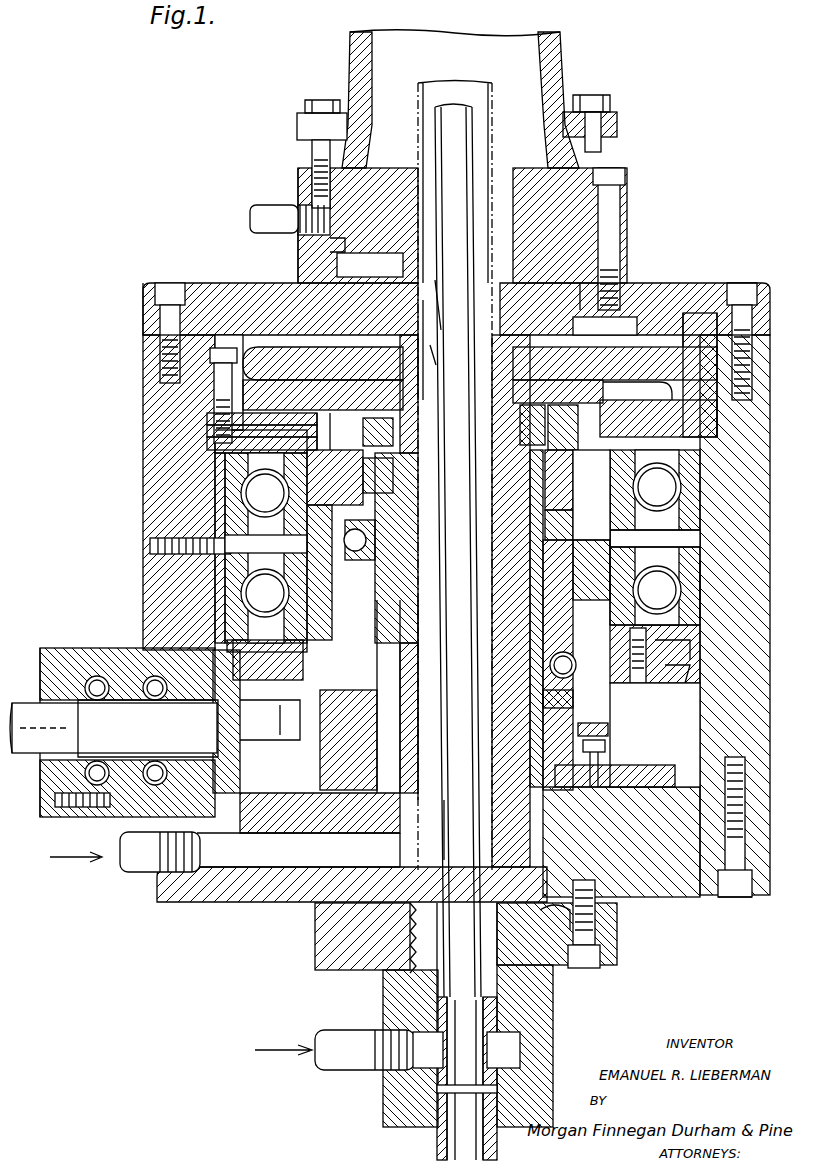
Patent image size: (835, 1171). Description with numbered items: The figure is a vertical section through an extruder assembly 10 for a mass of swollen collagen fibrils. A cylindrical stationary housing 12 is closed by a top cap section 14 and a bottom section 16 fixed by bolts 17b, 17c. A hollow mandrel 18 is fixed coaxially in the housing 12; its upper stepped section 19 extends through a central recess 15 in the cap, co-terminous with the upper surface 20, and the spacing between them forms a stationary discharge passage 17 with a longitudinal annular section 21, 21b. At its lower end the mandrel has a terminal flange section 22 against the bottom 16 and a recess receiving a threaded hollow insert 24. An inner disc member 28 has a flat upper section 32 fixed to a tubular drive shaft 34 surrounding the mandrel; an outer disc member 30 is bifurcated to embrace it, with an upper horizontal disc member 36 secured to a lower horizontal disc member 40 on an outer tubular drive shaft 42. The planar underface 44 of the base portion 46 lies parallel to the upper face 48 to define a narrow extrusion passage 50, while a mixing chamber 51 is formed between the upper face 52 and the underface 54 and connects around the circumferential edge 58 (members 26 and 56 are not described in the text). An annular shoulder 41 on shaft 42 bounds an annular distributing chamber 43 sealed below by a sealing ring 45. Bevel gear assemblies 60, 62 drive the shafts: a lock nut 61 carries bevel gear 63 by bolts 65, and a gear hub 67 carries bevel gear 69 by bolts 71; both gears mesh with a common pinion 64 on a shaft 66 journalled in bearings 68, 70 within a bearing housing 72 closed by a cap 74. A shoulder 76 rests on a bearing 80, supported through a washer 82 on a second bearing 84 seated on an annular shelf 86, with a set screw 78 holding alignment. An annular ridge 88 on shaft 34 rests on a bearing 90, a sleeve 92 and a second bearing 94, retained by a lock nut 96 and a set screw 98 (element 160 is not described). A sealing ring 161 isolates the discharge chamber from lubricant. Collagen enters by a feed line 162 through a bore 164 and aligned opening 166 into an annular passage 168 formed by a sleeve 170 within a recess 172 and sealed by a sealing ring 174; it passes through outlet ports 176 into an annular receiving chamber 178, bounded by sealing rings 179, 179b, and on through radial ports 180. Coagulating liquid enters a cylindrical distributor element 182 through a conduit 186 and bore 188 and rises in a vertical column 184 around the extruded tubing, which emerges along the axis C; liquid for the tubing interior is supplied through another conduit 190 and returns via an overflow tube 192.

The vertical column 184 is at (562, 60).
The conduit C is at (490, 100).
The annular passage 168 is at (445, 848).
The hollow mandrel 18 is at (425, 775).
The sleeve 170 is at (446, 810).
The central recess 15 is at (412, 290).
The stationary discharge passage 17 is at (422, 308).
The upper stepped section 19 is at (425, 325).
The longitudinal annular section 21 is at (436, 365).
The base portion 46 is at (338, 300).
The top cap section 14 is at (300, 292).
The conduit 186 is at (275, 208).
The bore 188 is at (338, 245).
The extruder assembly 10 is at (205, 228).
The cylindrical distributor element 182 is at (627, 215).
The sealing ring 161 is at (575, 285).
The upper surface 20 is at (700, 285).
The bolts 17b is at (742, 290).
The upper section 32 is at (752, 350).
The stationary housing 12 is at (168, 595).
The set screw 78 is at (150, 546).
The upper horizontal disc member 36 is at (215, 375).
The upper face 48 is at (212, 400).
The outer disc member 30 is at (190, 437).
The planar underface 44 is at (290, 350).
The extrusion passage 50 is at (300, 385).
The upper face 52 is at (260, 420).
The underface 54 is at (275, 432).
The plate 56 is at (295, 443).
The lower horizontal disc member 40 is at (310, 455).
The set screw 98 is at (266, 548).
The annular ridge 88 is at (375, 545).
The outer tubular drive shaft 42 is at (400, 630).
The tubular drive shaft 34 is at (410, 690).
The annular sealing rings 179 is at (393, 430).
The radial ports 180 is at (393, 470).
The annular receiving chamber 178 is at (335, 440).
The recess 172 is at (520, 420).
The outlet ports 176 is at (548, 440).
The annular distributing chamber 43 is at (545, 470).
The annular sealing rings 179b is at (578, 480).
The annular sealing ring 45 is at (545, 520).
The ring member 26 is at (640, 335).
The inner disc member 28 is at (650, 415).
The mixing chamber 51 is at (660, 392).
The circumferential edge 58 is at (717, 380).
The bearing 80 is at (700, 495).
The second bearing 84 is at (690, 570).
The annular shelf 86 is at (700, 598).
The bevel gear 69 is at (700, 770).
The bolts 17c is at (735, 900).
The shoulder 76 is at (622, 484).
The annular shoulder 41 is at (622, 500).
The washer 82 is at (650, 540).
The bearing 90 is at (586, 519).
The sleeve 92 is at (586, 575).
The second bearing 94 is at (565, 652).
The lock nut 61 is at (660, 640).
The bevel gear assembly 62 is at (685, 660).
The bevel gear 63 is at (672, 672).
The bolts 65 is at (640, 700).
The lock nut 96 is at (573, 712).
The ring 160 is at (608, 730).
The bolts 71 is at (605, 746).
The bevel gear assembly 60 is at (680, 742).
The gear hub 67 is at (335, 752).
The pinion 64 is at (272, 712).
The bottom section 16 is at (268, 897).
The bore 164 is at (230, 870).
The opening 166 is at (385, 880).
The feed line 162 is at (148, 872).
The cap 74 is at (50, 650).
The bearing 70 is at (90, 672).
The bearing 68 is at (148, 672).
The shaft 66 is at (47, 742).
The bearing housing 72 is at (120, 812).
The terminal flange section 22 is at (330, 950).
The sealing ring 174 is at (405, 960).
The overflow tube 192 is at (440, 1063).
The conduit 190 is at (348, 1072).
The longitudinal annular section 21b is at (600, 960).
The threaded hollow insert 24 is at (555, 910).